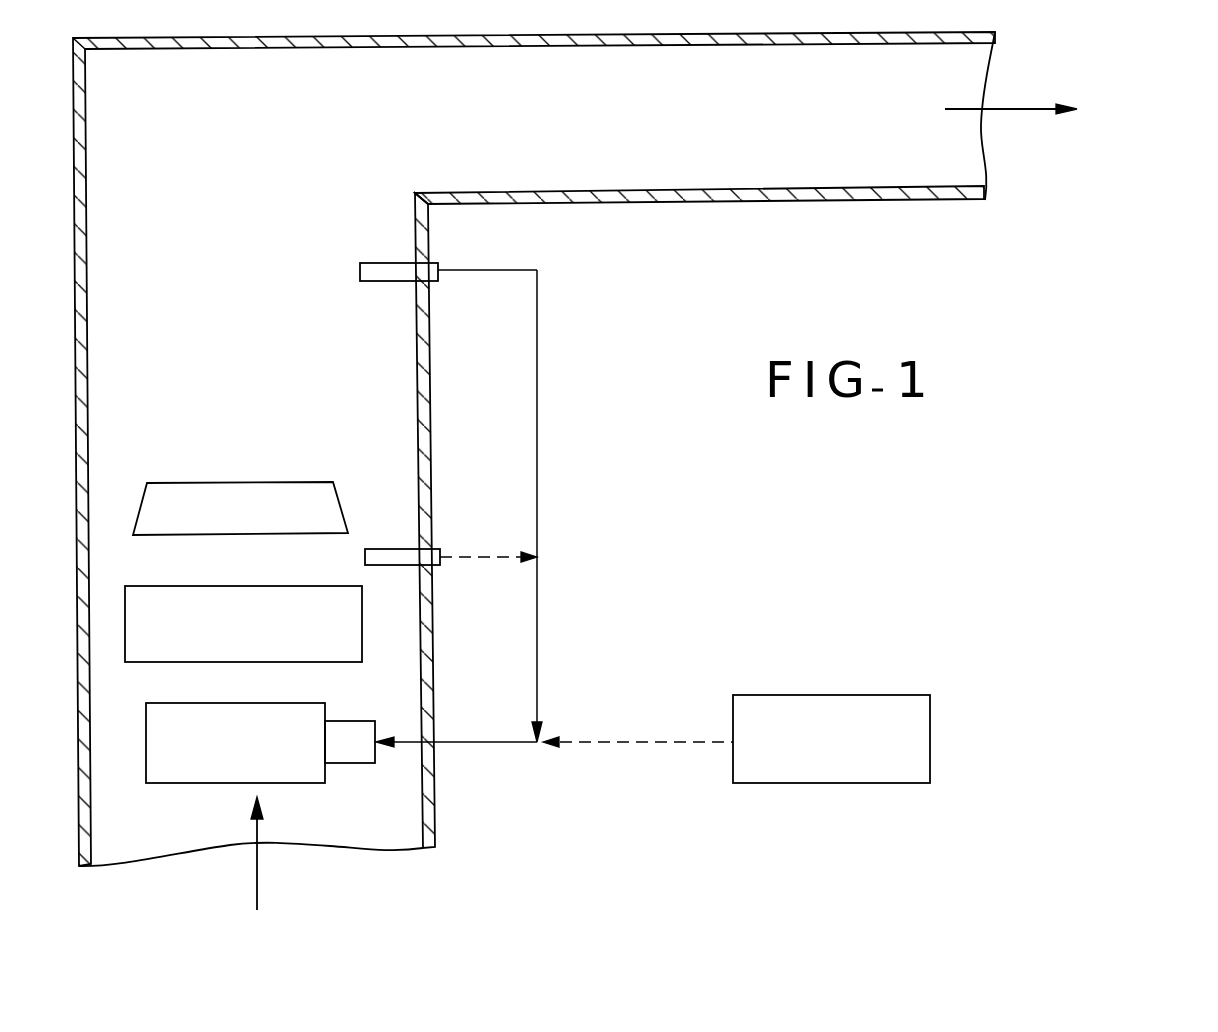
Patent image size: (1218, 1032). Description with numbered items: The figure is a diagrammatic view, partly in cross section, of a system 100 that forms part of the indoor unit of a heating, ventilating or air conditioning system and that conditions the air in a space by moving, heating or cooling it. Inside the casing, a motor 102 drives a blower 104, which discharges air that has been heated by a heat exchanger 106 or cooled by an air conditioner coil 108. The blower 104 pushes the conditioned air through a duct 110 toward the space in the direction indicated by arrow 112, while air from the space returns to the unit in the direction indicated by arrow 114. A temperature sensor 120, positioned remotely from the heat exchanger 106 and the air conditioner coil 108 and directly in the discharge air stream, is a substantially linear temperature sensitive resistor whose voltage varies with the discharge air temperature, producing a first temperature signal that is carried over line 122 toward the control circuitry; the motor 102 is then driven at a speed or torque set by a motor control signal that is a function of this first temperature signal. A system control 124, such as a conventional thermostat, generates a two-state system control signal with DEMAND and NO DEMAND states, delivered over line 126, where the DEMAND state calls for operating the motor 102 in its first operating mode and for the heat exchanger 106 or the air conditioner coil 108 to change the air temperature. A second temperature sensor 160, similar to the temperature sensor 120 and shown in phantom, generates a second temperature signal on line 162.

The system 100 is at (700, 543).
The motor 102 is at (362, 764).
The blower 104 is at (186, 785).
The heat exchanger 106 is at (182, 586).
The air conditioner coil 108 is at (343, 502).
The duct 110 is at (738, 202).
The arrow 112 is at (1028, 110).
The arrow 114 is at (257, 898).
The temperature sensor 120 is at (373, 263).
The line 122 is at (538, 400).
The system control 124 is at (828, 695).
The line 126 is at (631, 748).
The second temperature sensor 160 is at (365, 557).
The line 162 is at (467, 558).